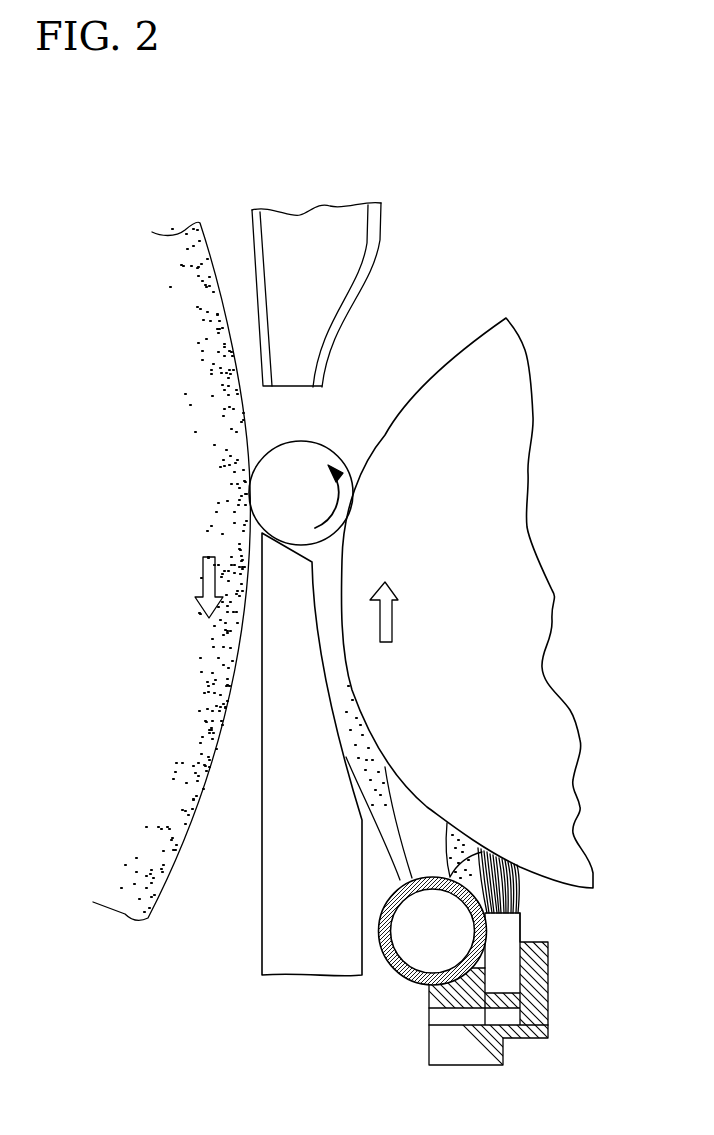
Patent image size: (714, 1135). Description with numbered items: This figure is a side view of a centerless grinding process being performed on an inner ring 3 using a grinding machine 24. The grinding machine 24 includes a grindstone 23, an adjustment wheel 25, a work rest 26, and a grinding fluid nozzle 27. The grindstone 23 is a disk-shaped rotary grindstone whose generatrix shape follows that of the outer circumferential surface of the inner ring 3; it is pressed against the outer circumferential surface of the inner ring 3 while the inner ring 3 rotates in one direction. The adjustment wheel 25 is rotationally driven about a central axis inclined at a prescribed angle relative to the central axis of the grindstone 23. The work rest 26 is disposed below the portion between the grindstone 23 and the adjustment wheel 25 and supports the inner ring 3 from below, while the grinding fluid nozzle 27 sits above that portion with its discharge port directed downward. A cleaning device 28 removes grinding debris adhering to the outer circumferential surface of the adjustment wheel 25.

The inner ring 3 is at (310, 460).
The grindstone 23 is at (213, 494).
The grinding machine 24 is at (165, 187).
The adjustment wheel 25 is at (512, 491).
The work rest 26 is at (280, 867).
The grinding fluid nozzle 27 is at (358, 227).
The cleaning device 28 is at (393, 970).